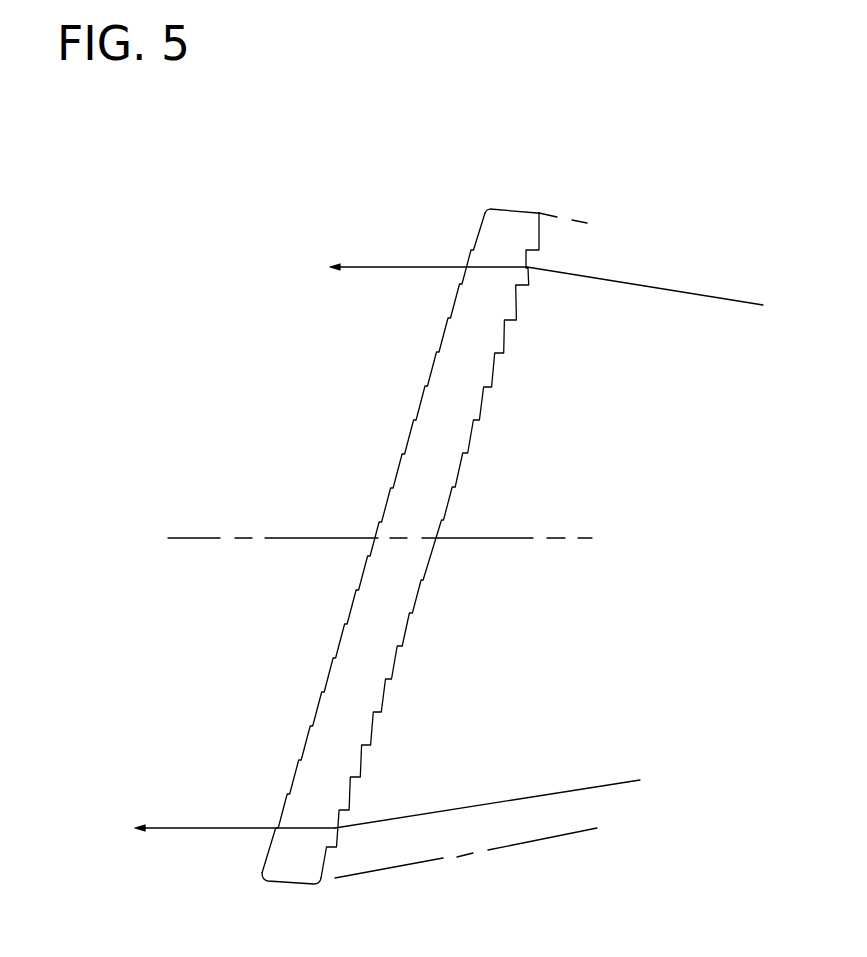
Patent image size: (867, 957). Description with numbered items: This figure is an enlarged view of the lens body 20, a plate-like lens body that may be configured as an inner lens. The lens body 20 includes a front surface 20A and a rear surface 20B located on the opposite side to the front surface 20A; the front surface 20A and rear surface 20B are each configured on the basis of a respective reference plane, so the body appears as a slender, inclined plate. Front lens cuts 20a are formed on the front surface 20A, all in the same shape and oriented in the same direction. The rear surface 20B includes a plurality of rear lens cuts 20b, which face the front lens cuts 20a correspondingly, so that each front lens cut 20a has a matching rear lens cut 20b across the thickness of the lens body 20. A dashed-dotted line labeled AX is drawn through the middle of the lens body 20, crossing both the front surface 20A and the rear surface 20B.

The lens body 20 is at (438, 518).
The front surface 20A is at (390, 448).
The rear surface 20B is at (475, 468).
The front lens cut 20a is at (468, 267).
The rear lens cut 20b is at (530, 252).
The optical axis AX is at (212, 537).